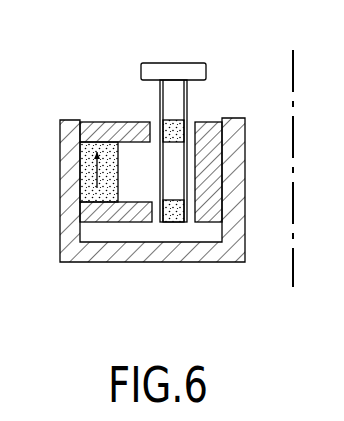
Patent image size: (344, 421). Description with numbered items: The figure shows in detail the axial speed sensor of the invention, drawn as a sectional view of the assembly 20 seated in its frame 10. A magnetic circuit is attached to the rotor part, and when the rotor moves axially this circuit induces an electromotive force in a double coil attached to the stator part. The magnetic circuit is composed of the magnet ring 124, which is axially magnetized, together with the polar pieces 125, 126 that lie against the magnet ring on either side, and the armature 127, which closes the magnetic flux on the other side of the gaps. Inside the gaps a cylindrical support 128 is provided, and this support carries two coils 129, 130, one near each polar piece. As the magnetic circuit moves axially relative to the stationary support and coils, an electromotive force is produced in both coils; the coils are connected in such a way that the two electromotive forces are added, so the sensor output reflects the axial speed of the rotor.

The housing 10 is at (146, 262).
The moving coil assembly 20 is at (196, 53).
The magnet ring 124 is at (92, 167).
The polar piece 125 is at (97, 127).
The polar piece 126 is at (110, 213).
The armature 127 is at (207, 177).
The cylindrical support 128 is at (173, 92).
The coil 129 is at (183, 119).
The coil 130 is at (176, 210).